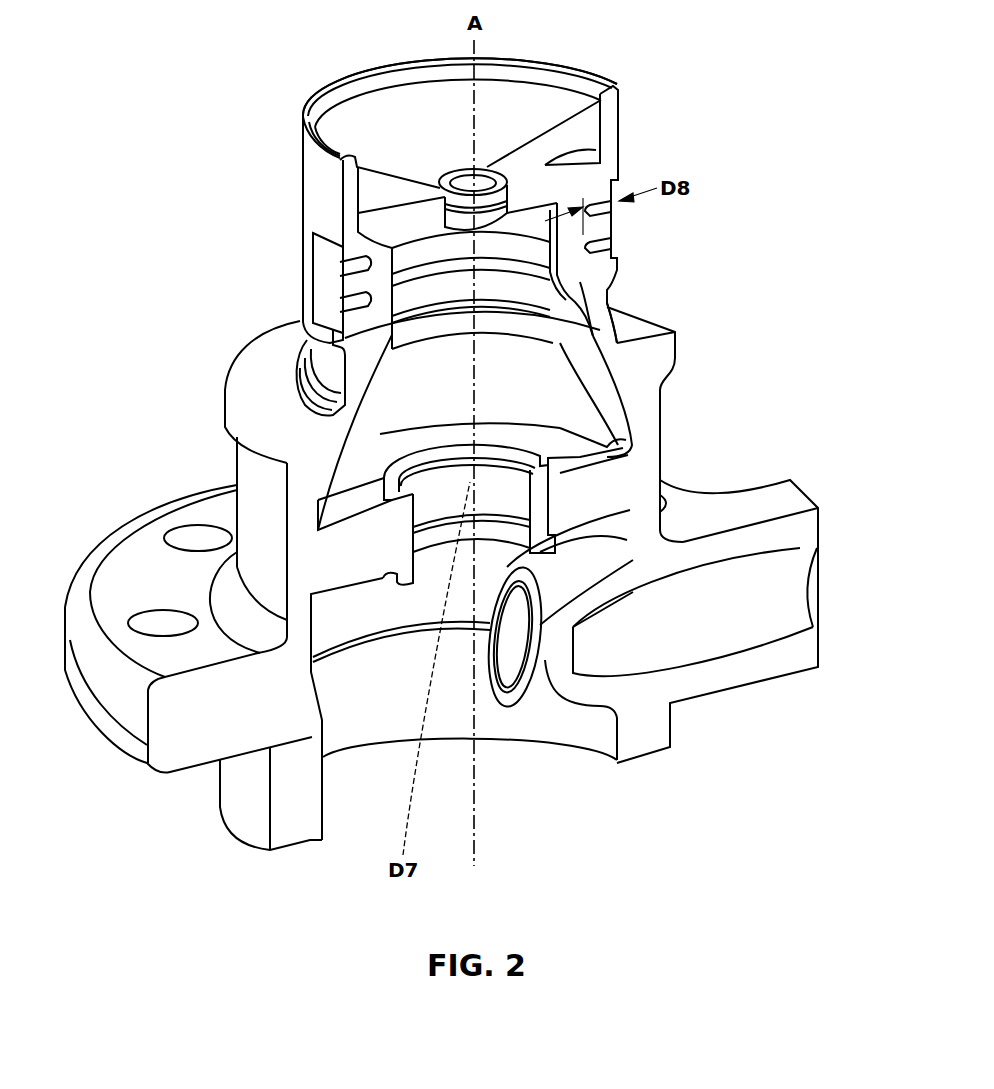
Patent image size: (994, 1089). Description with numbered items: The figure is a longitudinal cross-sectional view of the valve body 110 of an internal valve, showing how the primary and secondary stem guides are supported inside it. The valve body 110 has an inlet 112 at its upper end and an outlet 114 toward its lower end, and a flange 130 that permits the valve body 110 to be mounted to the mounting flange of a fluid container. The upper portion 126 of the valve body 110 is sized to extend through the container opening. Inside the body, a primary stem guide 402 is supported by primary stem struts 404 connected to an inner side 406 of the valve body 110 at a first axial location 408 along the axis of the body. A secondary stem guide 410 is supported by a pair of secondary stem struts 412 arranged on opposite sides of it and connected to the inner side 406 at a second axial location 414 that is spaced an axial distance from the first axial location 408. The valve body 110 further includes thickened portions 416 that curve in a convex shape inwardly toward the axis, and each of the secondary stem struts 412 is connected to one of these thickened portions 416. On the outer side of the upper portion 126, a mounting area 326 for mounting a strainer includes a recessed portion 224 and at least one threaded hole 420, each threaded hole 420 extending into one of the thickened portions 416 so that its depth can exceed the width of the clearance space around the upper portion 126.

The valve body 110 is at (288, 818).
The inlet 112 is at (318, 122).
The outlet 114 is at (615, 760).
The upper portion 126 is at (705, 68).
The flange 130 is at (183, 728).
The recessed portion 224 is at (330, 283).
The mounting area 326 is at (626, 188).
The primary stem guide 402 is at (391, 467).
The primary stem struts 404 is at (600, 500).
The inner side 406 is at (370, 265).
The first axial location 408 is at (480, 468).
The secondary stem guide 410 is at (425, 182).
The secondary stem struts 412 is at (417, 223).
The second axial location 414 is at (490, 178).
The thickened portions 416 is at (580, 284).
The threaded hole 420 is at (603, 242).